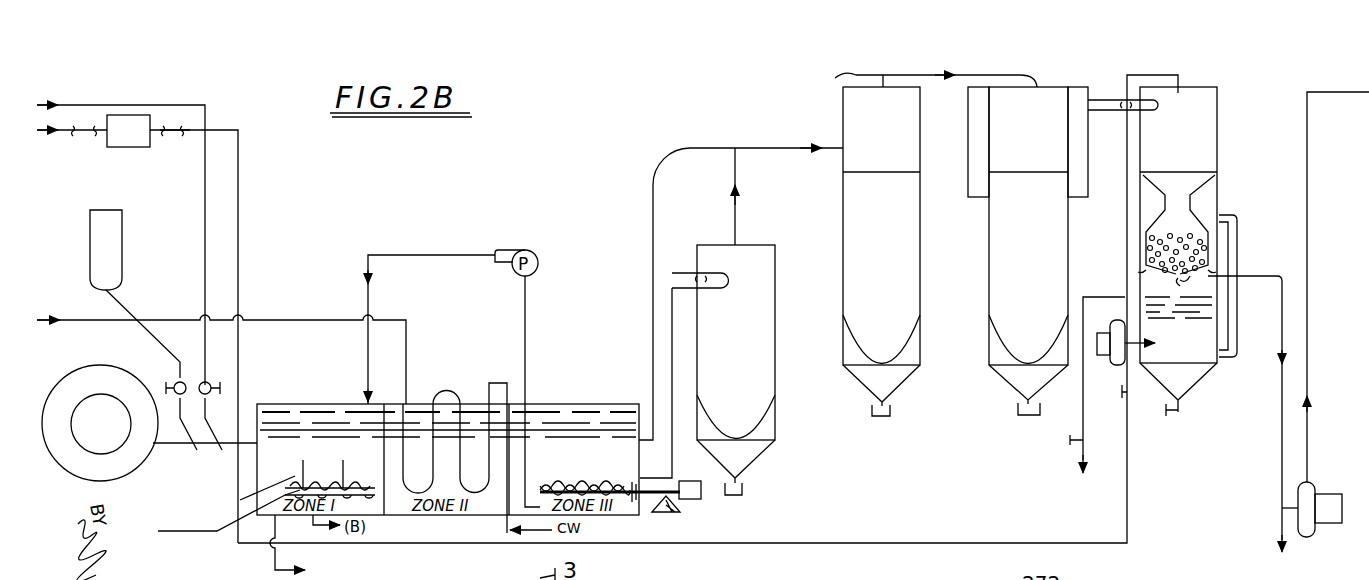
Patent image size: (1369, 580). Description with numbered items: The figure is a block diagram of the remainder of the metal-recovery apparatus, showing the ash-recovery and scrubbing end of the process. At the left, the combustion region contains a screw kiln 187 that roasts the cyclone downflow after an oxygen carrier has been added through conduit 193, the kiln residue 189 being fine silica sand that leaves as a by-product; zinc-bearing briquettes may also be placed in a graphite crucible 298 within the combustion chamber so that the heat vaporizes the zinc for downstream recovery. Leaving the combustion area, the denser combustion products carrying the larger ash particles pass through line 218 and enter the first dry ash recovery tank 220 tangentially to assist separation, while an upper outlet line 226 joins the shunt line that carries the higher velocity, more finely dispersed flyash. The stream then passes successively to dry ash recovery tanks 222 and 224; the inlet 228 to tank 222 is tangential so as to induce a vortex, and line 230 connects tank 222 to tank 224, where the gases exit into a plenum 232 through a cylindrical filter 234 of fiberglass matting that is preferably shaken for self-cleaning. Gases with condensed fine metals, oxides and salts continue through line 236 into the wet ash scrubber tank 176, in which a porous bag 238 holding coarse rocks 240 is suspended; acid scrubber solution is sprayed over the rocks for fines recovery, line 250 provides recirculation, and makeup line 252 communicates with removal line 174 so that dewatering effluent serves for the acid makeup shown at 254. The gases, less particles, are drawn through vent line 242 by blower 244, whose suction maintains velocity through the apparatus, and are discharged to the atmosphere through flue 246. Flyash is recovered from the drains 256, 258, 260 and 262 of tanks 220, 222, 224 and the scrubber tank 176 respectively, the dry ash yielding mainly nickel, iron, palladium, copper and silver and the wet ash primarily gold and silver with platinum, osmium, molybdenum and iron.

The removal line 174 is at (68, 131).
The acid makeup 254 is at (128, 131).
The makeup line 252 is at (239, 136).
The graphite crucible 298 is at (282, 480).
The conduit 193 is at (178, 532).
The screw kiln 187 is at (385, 487).
The kiln residue 189 is at (663, 514).
The conduit 218 is at (669, 285).
The dry ash recovery tank 220 is at (736, 364).
The dry ash recovery tank 222 is at (881, 246).
The dry ash recovery tank 224 is at (1028, 245).
The upper outlet line 226 is at (738, 216).
The inlet 228 is at (765, 147).
The line 230 is at (914, 88).
The plenum 232 is at (1089, 173).
The cylindrical filter 234 is at (1010, 104).
The line 236 is at (1112, 104).
The porous bag 238 is at (1166, 217).
The coarse rocks 240 is at (1200, 245).
The vent line 242 is at (1282, 296).
The blower 244 is at (1320, 506).
The flue 246 is at (1308, 258).
The line 250 is at (1125, 284).
The drain 256 is at (741, 478).
The drain 258 is at (885, 402).
The drain 260 is at (1036, 397).
The drain 262 is at (1183, 404).
The scrubber tank 176 is at (1157, 265).